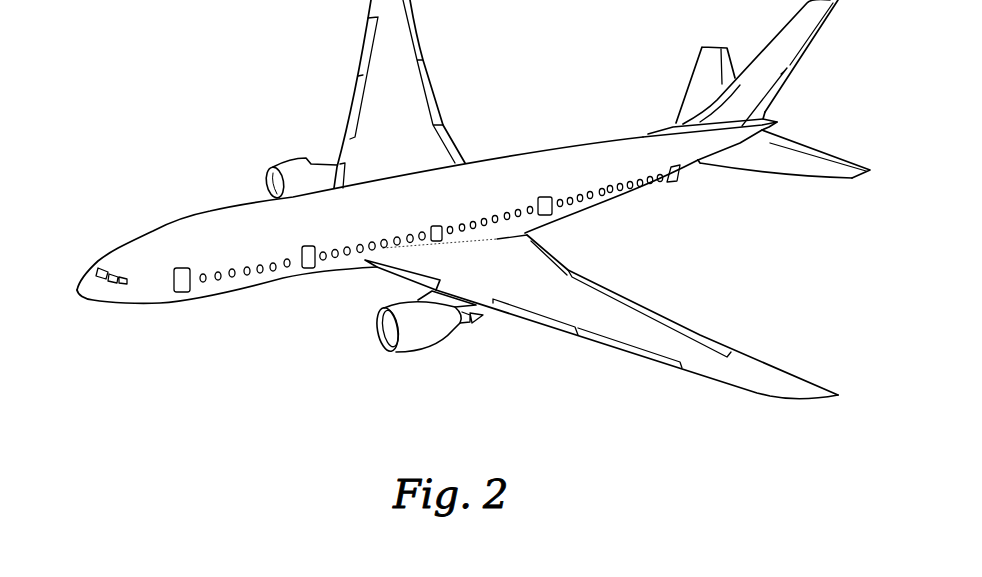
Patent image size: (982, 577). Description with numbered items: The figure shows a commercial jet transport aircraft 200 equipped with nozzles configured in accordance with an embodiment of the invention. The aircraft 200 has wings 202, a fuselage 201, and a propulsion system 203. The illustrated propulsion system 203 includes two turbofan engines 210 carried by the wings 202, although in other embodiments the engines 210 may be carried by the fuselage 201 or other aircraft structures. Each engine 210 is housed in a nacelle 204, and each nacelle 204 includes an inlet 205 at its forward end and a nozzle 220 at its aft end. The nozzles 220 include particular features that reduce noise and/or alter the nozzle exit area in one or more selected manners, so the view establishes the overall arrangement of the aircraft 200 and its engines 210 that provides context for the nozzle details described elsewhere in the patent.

The commercial jet transport aircraft 200 is at (103, 169).
The fuselage 201 is at (235, 208).
The wings 202 is at (395, 100).
The propulsion system 203 is at (420, 369).
The nacelle 204 is at (443, 339).
The inlet 205 is at (387, 345).
The turbofan engines 210 is at (288, 166).
The nozzle 220 is at (473, 323).